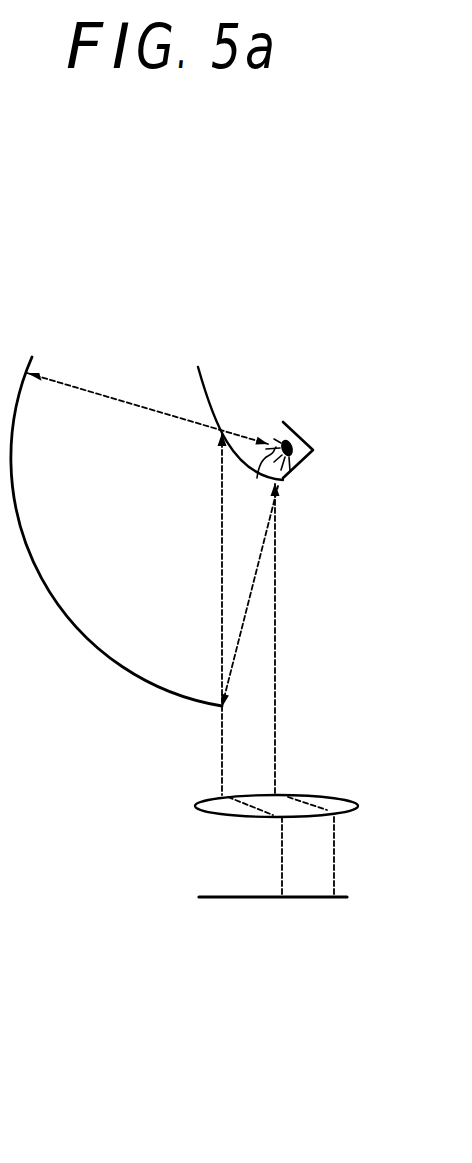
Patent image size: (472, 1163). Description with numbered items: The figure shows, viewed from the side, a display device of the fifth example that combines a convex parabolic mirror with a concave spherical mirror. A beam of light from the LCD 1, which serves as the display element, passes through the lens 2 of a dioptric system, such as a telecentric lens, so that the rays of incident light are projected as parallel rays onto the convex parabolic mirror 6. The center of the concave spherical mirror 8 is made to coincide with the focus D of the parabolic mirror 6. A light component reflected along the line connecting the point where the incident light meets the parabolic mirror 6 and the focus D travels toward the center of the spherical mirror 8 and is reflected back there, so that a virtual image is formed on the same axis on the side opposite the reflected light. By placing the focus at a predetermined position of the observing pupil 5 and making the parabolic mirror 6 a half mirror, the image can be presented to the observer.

The LCD 1 is at (243, 896).
The lens 2 is at (322, 795).
The observing pupil 5 is at (284, 424).
The convex parabolic mirror 6 is at (200, 395).
The concave spherical mirror 8 is at (21, 524).
The focus of the parabolic mirror D is at (258, 479).